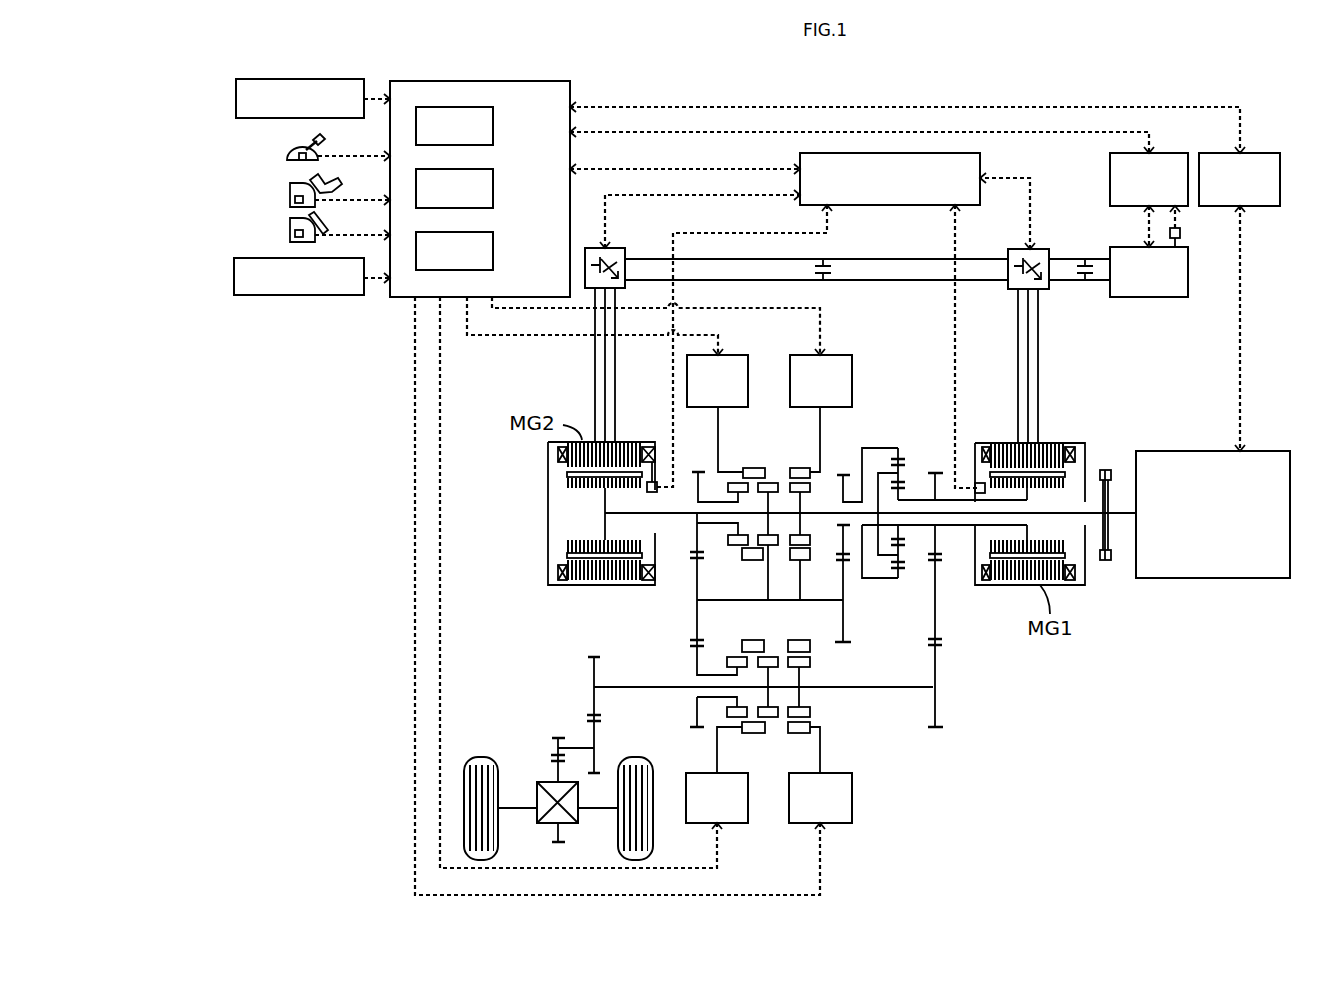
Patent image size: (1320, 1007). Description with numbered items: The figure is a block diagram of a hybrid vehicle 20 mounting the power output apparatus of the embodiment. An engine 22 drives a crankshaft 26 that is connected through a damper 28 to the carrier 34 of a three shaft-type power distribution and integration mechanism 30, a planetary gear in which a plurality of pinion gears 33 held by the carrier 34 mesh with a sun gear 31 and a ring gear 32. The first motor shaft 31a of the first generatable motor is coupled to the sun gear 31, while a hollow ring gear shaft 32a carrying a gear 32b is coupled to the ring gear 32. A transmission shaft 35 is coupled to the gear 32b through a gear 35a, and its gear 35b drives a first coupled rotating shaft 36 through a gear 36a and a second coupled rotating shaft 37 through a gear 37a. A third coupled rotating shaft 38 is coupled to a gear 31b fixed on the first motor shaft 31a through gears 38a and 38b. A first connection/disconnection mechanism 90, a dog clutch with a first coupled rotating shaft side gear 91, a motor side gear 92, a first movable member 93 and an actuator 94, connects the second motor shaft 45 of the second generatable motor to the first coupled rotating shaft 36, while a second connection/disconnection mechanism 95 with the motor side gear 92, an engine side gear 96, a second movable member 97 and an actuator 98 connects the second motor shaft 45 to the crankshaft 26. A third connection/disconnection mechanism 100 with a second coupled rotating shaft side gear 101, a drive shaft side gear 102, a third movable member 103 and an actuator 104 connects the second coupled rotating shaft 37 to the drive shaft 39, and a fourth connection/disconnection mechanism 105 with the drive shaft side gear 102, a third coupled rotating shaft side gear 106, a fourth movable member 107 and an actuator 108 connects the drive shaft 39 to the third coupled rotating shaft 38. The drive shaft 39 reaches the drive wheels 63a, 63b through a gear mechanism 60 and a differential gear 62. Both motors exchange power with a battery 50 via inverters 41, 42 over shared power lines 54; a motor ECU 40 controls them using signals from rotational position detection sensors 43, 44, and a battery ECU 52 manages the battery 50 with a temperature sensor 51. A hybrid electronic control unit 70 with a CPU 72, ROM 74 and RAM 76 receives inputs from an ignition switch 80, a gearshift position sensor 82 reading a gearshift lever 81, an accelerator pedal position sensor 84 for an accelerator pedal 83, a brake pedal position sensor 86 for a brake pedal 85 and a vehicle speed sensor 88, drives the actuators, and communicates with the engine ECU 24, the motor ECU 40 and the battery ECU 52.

The hybrid vehicle 20 is at (1046, 82).
The engine 22 is at (1214, 578).
The engine ECU 24 is at (1226, 153).
The crankshaft 26 is at (1122, 517).
The damper 28 is at (1106, 562).
The power distribution and integration mechanism 30 is at (930, 478).
The sun gear 31 is at (902, 497).
The rotating shaft of motor MG1 31a is at (953, 526).
The gear 31b is at (937, 549).
The ring gear 32 is at (898, 447).
The ring gear shaft 32a is at (850, 530).
The gear 32b is at (851, 470).
The pinion gears 33 is at (905, 460).
The carrier 34 is at (880, 472).
The transmission shaft 35 is at (780, 600).
The gear 35a is at (845, 627).
The gear 35b is at (697, 646).
The first coupled rotating shaft 36 is at (718, 527).
The gear 36a is at (694, 486).
The second coupled rotating shaft 37 is at (708, 698).
The gear 37a is at (697, 700).
The third coupled rotating shaft 38 is at (876, 688).
The gear 38a is at (936, 712).
The gear 38b is at (936, 637).
The drive shaft 39 is at (622, 685).
The motor ECU 40 is at (982, 160).
The inverter 41 is at (1049, 250).
The inverter 42 is at (620, 248).
The rotational position detection sensor 43 is at (977, 483).
The rotational position detection sensor 44 is at (652, 447).
The rotating shaft of motor MG2 45 is at (678, 515).
The battery 50 is at (1150, 297).
The temperature sensor 51 is at (1182, 233).
The battery ECU 52 is at (1110, 166).
The power lines 54 is at (873, 280).
The gear mechanism 60 is at (555, 751).
The differential gear 62 is at (580, 820).
The drive wheel 63a is at (481, 757).
The drive wheel 63b is at (633, 757).
The hybrid electronic control unit 70 is at (485, 81).
The CPU 72 is at (493, 125).
The ROM 74 is at (493, 188).
The RAM 76 is at (493, 251).
The ignition switch 80 is at (236, 95).
The gearshift lever 81 is at (316, 140).
The gearshift position sensor 82 is at (292, 158).
The accelerator pedal 83 is at (320, 186).
The accelerator pedal position sensor 84 is at (290, 203).
The brake pedal 85 is at (318, 222).
The brake pedal position sensor 86 is at (290, 239).
The vehicle speed sensor 88 is at (234, 278).
The first connection/disconnection mechanism 90 is at (736, 455).
The first coupled rotating shaft side gear 91 is at (741, 549).
The motor side gear 92 is at (771, 547).
The first movable member 93 is at (752, 468).
The actuator 94 is at (748, 398).
The second connection/disconnection mechanism 95 is at (848, 452).
The engine side gear 96 is at (812, 541).
The second movable member 97 is at (800, 468).
The actuator 98 is at (848, 355).
The third connection/disconnection mechanism 100 is at (743, 750).
The second coupled rotating shaft side gear 101 is at (733, 656).
The drive shaft side gear 102 is at (772, 656).
The third movable member 103 is at (755, 733).
The actuator 104 is at (748, 800).
The fourth connection/disconnection mechanism 105 is at (860, 754).
The third coupled rotating shaft side gear 106 is at (810, 662).
The fourth movable member 107 is at (800, 733).
The actuator 108 is at (852, 825).